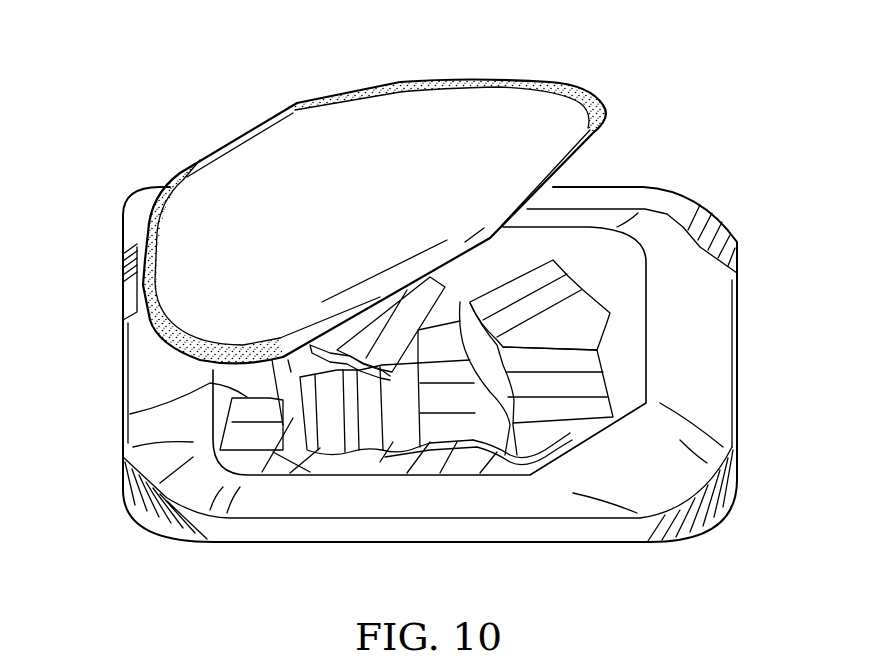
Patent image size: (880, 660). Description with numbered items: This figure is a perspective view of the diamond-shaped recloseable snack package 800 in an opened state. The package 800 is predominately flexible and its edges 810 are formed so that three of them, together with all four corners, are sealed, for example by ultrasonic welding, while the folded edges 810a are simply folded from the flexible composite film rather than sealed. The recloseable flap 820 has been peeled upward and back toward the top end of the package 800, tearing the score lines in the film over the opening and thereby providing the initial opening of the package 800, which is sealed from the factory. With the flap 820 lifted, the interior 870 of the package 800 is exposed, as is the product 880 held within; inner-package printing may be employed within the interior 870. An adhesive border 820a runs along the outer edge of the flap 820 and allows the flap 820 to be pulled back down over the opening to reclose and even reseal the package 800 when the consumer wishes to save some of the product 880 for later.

The recloseable snack package 800 is at (686, 131).
The edges 810 is at (277, 542).
The folded edges 810a is at (112, 348).
The recloseable flap 820 is at (368, 216).
The adhesive border 820a is at (546, 92).
The interior 870 is at (622, 338).
The product 880 is at (130, 414).